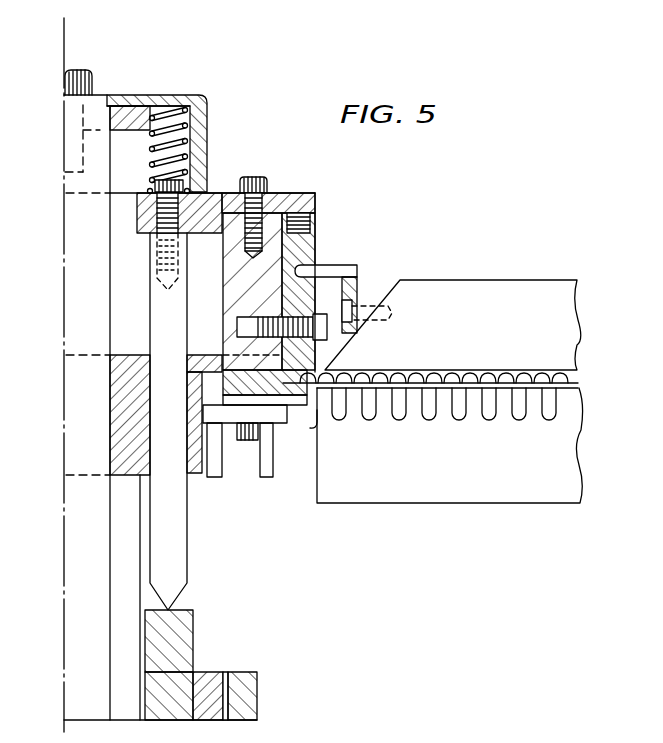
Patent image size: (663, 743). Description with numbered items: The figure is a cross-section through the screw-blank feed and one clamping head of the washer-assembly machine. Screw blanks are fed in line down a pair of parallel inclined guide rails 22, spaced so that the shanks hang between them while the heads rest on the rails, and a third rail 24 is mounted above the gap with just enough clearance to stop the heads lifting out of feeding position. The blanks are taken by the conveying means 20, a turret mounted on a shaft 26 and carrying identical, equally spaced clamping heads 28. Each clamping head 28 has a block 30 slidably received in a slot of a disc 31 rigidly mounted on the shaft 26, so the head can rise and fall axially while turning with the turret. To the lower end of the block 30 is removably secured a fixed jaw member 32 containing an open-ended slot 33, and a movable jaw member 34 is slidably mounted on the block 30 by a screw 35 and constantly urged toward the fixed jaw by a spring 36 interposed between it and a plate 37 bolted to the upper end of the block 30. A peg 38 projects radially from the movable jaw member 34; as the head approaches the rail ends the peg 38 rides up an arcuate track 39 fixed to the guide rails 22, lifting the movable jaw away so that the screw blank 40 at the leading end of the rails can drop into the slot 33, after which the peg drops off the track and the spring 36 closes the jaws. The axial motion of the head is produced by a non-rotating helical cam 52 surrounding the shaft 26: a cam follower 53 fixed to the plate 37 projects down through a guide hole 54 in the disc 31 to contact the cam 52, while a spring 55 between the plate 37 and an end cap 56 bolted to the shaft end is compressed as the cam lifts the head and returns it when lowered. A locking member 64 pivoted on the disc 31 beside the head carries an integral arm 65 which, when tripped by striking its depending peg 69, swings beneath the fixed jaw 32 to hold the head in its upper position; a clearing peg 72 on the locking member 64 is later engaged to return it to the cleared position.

The conveying means 20 is at (86, 63).
The guide rails 22 is at (470, 471).
The third rail 24 is at (490, 287).
The shaft 26 is at (84, 278).
The clamping head 28 is at (319, 198).
The block 30 is at (270, 253).
The disc 31 is at (118, 367).
The fixed jaw member 32 is at (233, 367).
The slot 33 is at (300, 372).
The movable jaw member 34 is at (318, 255).
The screw 35 is at (338, 337).
The spring 36 is at (302, 232).
The plate 37 is at (219, 192).
The peg 38 is at (357, 266).
The arcuate track 39 is at (357, 285).
The screw blank 40 is at (317, 428).
The helical cam 52 is at (186, 633).
The cam follower 53 is at (187, 543).
The guide hole 54 is at (155, 367).
The spring 55 is at (204, 148).
The end cap 56 is at (178, 94).
The locking member 64 is at (235, 420).
The arm 65 is at (207, 410).
The peg 69 is at (270, 478).
The clearing peg 72 is at (217, 478).